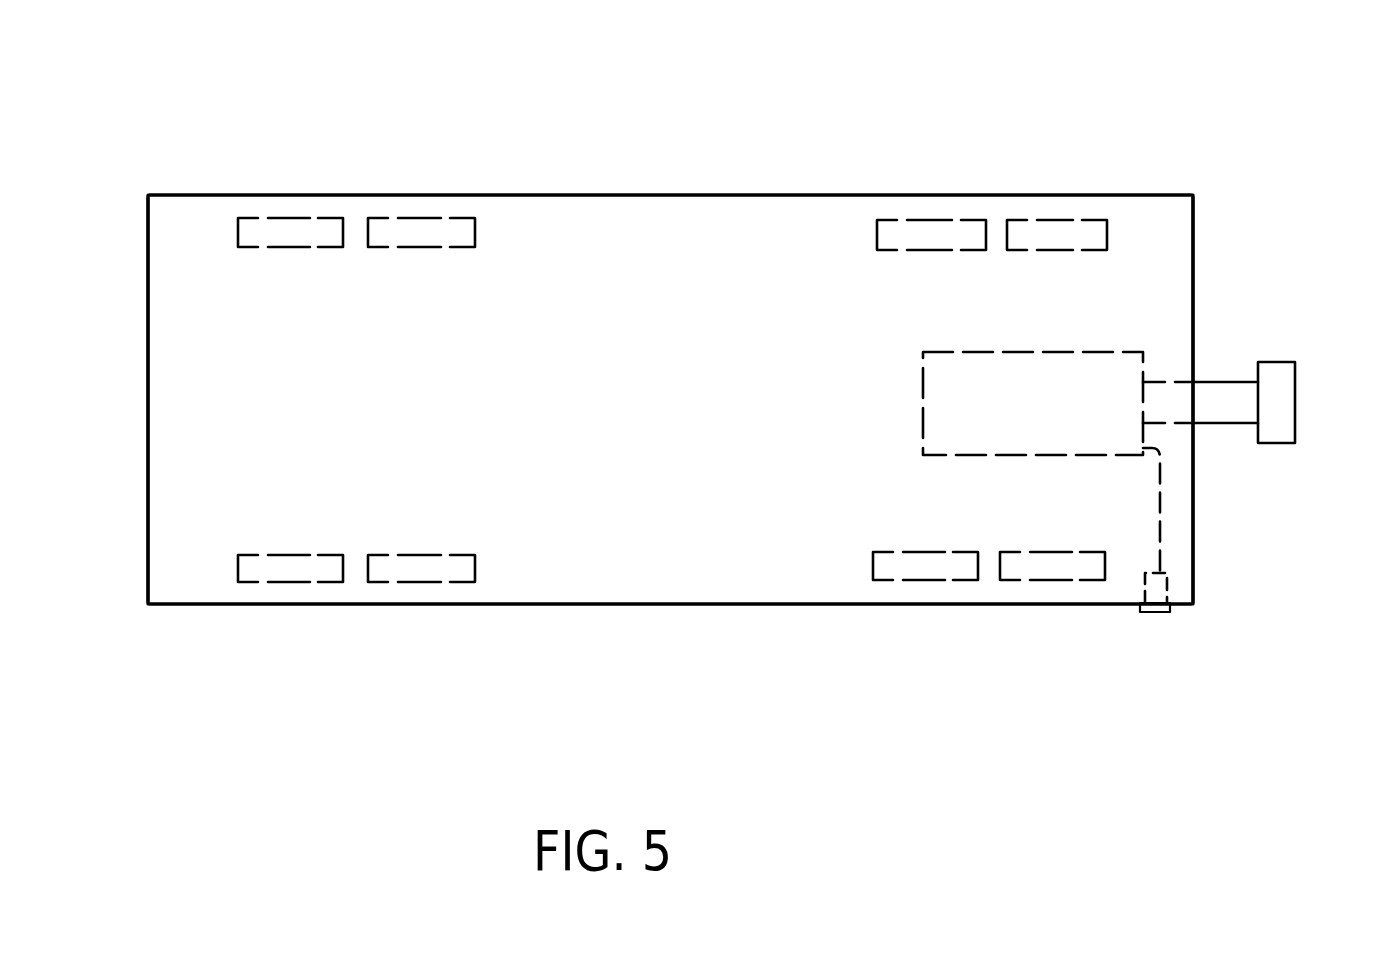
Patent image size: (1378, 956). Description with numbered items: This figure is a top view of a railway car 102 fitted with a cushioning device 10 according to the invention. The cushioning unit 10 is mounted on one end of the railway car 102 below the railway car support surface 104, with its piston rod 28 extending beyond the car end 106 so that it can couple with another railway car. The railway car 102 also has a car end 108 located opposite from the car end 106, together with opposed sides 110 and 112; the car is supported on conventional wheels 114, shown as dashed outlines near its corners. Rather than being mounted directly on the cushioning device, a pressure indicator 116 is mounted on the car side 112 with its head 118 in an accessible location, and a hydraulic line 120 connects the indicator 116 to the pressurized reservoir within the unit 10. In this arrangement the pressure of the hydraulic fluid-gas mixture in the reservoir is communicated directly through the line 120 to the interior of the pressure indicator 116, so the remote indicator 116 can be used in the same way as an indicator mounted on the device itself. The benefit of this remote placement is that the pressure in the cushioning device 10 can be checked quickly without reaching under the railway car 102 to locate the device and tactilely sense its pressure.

The cushioning device 10 is at (922, 405).
The piston rod 28 is at (1173, 380).
The railway car 102 is at (380, 665).
The railway car support surface 104 is at (668, 373).
The car end 106 is at (1195, 268).
The car end 108 is at (147, 315).
The car side 110 is at (670, 195).
The car side 112 is at (718, 605).
The wheels 114 is at (422, 248).
The pressure indicator 116 is at (1172, 617).
The head 118 is at (1140, 606).
The hydraulic line 120 is at (1156, 512).